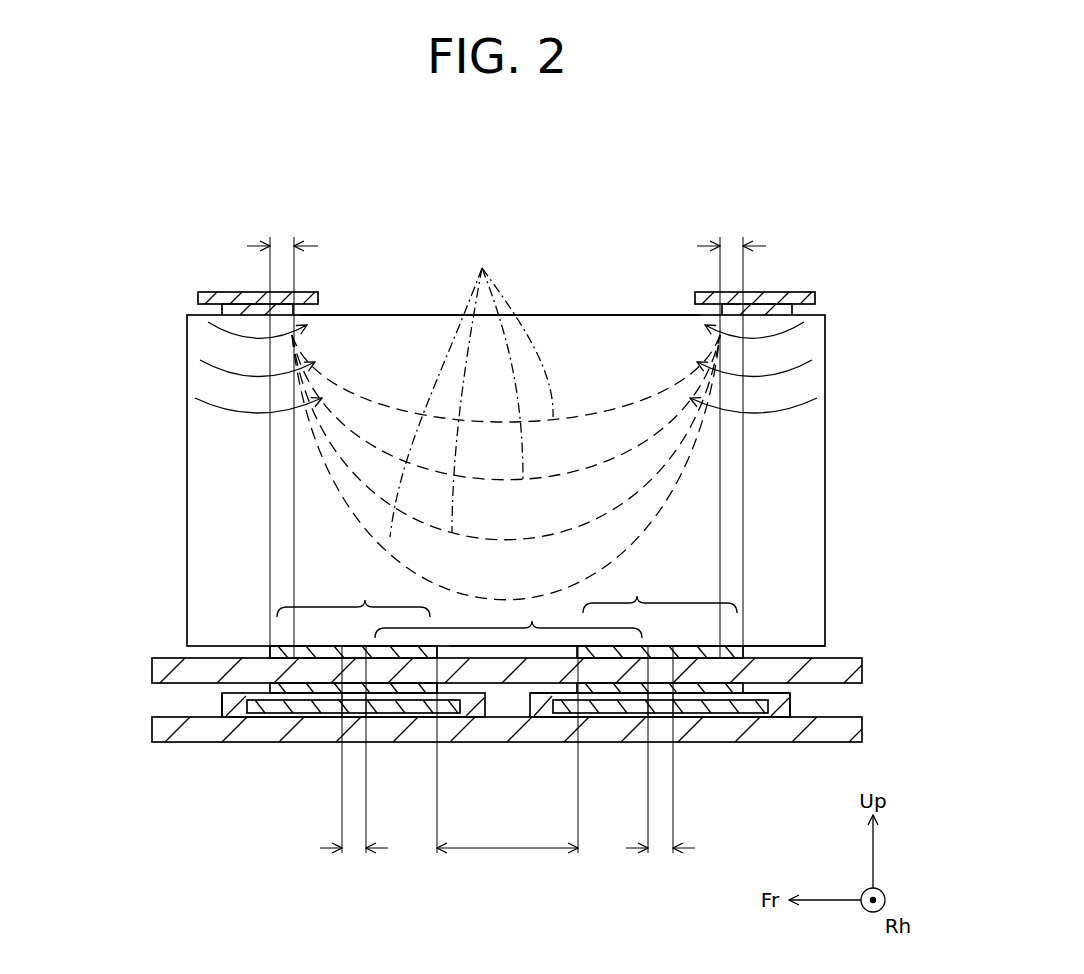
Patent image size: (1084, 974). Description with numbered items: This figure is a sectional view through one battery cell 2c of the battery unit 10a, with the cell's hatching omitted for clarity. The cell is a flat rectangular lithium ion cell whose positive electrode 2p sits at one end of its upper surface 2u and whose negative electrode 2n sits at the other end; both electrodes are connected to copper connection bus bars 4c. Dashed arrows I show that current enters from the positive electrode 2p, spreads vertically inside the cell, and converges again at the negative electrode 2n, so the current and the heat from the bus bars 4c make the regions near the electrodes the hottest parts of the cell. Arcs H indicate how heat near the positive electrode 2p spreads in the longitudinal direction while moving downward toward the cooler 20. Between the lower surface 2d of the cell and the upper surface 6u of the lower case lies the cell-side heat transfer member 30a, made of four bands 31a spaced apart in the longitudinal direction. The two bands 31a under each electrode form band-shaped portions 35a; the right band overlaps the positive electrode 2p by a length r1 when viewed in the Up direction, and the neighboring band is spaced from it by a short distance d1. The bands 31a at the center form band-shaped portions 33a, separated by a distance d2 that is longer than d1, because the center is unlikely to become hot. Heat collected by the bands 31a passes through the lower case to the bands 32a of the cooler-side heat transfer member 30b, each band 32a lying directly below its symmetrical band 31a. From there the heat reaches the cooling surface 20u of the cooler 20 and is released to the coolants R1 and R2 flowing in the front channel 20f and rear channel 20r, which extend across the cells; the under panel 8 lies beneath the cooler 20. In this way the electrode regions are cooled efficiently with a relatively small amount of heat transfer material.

The battery unit 10a is at (150, 244).
The battery cell 2c is at (192, 433).
The upper surface of case 2u is at (565, 315).
The lower surface 2d is at (818, 650).
The negative electrode 2n is at (228, 312).
The positive electrode 2p is at (813, 307).
The connection bus bar 4c is at (208, 294).
The arcs H is at (213, 338).
The dashed arrows I is at (482, 290).
The cell-side heat transfer member 30a is at (250, 653).
The band 31a is at (380, 650).
The band-shaped portions 35a is at (365, 590).
The band-shaped portions 33a is at (531, 617).
The upper surface 6u is at (162, 666).
The cooler-side heat transfer member 30b is at (250, 688).
The cooler 20 is at (803, 705).
The front channel 20f is at (240, 710).
The rear channel 20r is at (775, 706).
The cooling surface 20u is at (773, 690).
The coolant R1 is at (262, 708).
The coolant R2 is at (754, 707).
The band 32a is at (286, 722).
The under panel 8 is at (196, 730).
The length r1 is at (506, 437).
The distance d1 is at (507, 766).
The distance d2 is at (507, 766).